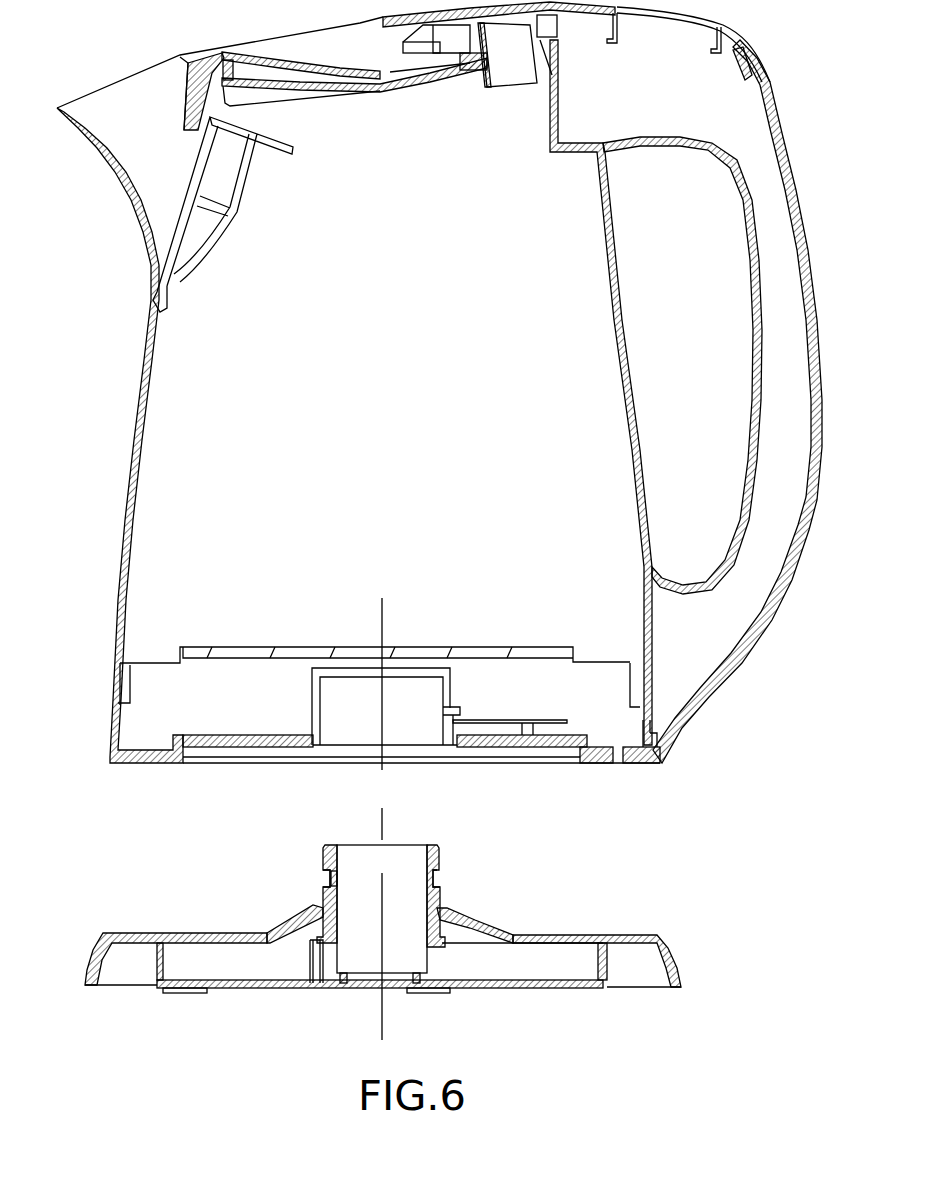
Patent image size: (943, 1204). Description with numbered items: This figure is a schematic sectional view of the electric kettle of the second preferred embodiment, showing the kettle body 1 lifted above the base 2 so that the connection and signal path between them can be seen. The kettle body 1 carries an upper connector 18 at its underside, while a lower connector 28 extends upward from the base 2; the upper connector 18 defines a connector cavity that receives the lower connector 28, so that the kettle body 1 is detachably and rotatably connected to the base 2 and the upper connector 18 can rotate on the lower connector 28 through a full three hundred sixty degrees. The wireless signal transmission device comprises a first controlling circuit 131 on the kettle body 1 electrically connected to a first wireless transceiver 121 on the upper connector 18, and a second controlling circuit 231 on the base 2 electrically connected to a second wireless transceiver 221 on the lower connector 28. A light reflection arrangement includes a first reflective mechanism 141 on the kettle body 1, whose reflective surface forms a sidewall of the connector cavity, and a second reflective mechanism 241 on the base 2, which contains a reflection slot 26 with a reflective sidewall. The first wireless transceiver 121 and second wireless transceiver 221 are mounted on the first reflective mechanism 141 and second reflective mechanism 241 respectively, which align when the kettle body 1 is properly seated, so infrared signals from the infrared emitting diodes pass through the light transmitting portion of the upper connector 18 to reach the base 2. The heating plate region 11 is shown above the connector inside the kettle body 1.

The kettle body 1 is at (122, 480).
The heating plate 11 is at (480, 652).
The first reflective mechanism 141 is at (317, 697).
The upper connector 18 is at (317, 710).
The first wireless transceiver 121 is at (450, 716).
The first controlling circuit 131 is at (470, 723).
The base 2 is at (197, 933).
The lower connector 28 is at (435, 845).
The second wireless transceiver 221 is at (323, 880).
The reflection slot 26 is at (320, 885).
The second reflective mechanism 241 is at (440, 880).
The second controlling circuit 231 is at (310, 943).